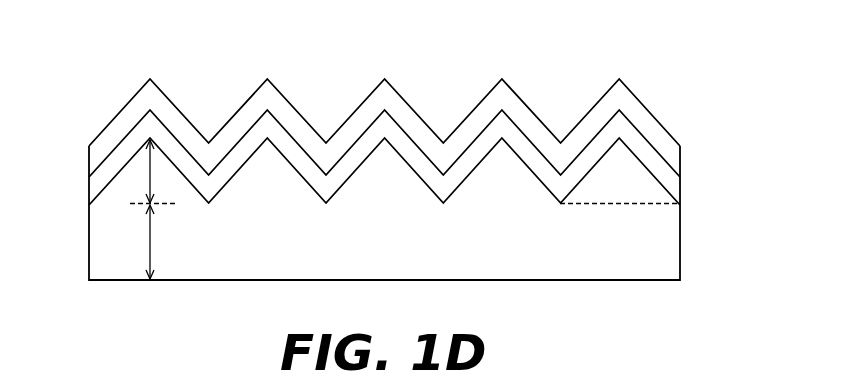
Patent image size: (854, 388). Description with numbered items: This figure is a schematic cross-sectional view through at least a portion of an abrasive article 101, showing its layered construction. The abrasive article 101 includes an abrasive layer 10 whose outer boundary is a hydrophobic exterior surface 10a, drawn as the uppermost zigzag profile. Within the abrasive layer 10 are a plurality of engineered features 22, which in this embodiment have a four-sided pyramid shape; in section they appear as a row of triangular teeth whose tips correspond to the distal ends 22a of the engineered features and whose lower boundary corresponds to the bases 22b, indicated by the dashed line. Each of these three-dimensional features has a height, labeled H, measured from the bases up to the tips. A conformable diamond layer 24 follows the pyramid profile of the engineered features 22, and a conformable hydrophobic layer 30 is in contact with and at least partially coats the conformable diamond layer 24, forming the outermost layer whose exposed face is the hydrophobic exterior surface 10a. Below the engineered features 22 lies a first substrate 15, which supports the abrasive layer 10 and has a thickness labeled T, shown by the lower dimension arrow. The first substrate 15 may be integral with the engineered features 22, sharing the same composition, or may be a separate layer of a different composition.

The abrasive layer 10 is at (403, 145).
The abrasive article 101 is at (364, 94).
The hydrophobic exterior surface 10a is at (632, 82).
The conformable hydrophobic layer 30 is at (364, 99).
The conformable diamond layer 24 is at (115, 162).
The engineered features 22 is at (417, 168).
The distal ends 22a is at (623, 136).
The bases 22b is at (640, 204).
The first substrate 15 is at (680, 260).